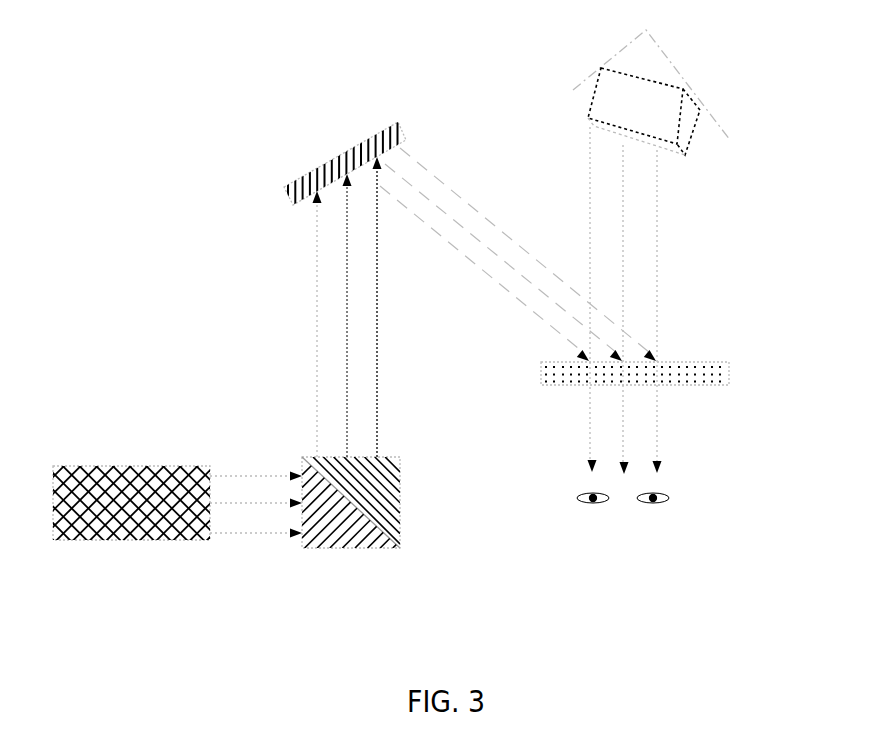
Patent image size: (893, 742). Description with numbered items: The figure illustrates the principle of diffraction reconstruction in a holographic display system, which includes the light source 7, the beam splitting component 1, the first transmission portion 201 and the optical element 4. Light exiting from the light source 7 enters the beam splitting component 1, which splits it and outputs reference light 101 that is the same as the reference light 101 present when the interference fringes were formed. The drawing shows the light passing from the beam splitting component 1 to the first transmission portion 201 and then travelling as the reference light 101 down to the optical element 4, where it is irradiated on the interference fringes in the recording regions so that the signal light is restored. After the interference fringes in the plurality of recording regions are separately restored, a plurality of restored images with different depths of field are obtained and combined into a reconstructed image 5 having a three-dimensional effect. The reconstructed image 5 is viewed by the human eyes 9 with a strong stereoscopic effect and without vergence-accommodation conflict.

The beam splitting component 1 is at (335, 548).
The optical element 4 is at (703, 367).
The reconstructed image 5 is at (637, 103).
The light source 7 is at (122, 466).
The human eyes 9 is at (667, 498).
The reference light 101 is at (527, 273).
The first transmission portion 201 is at (328, 148).